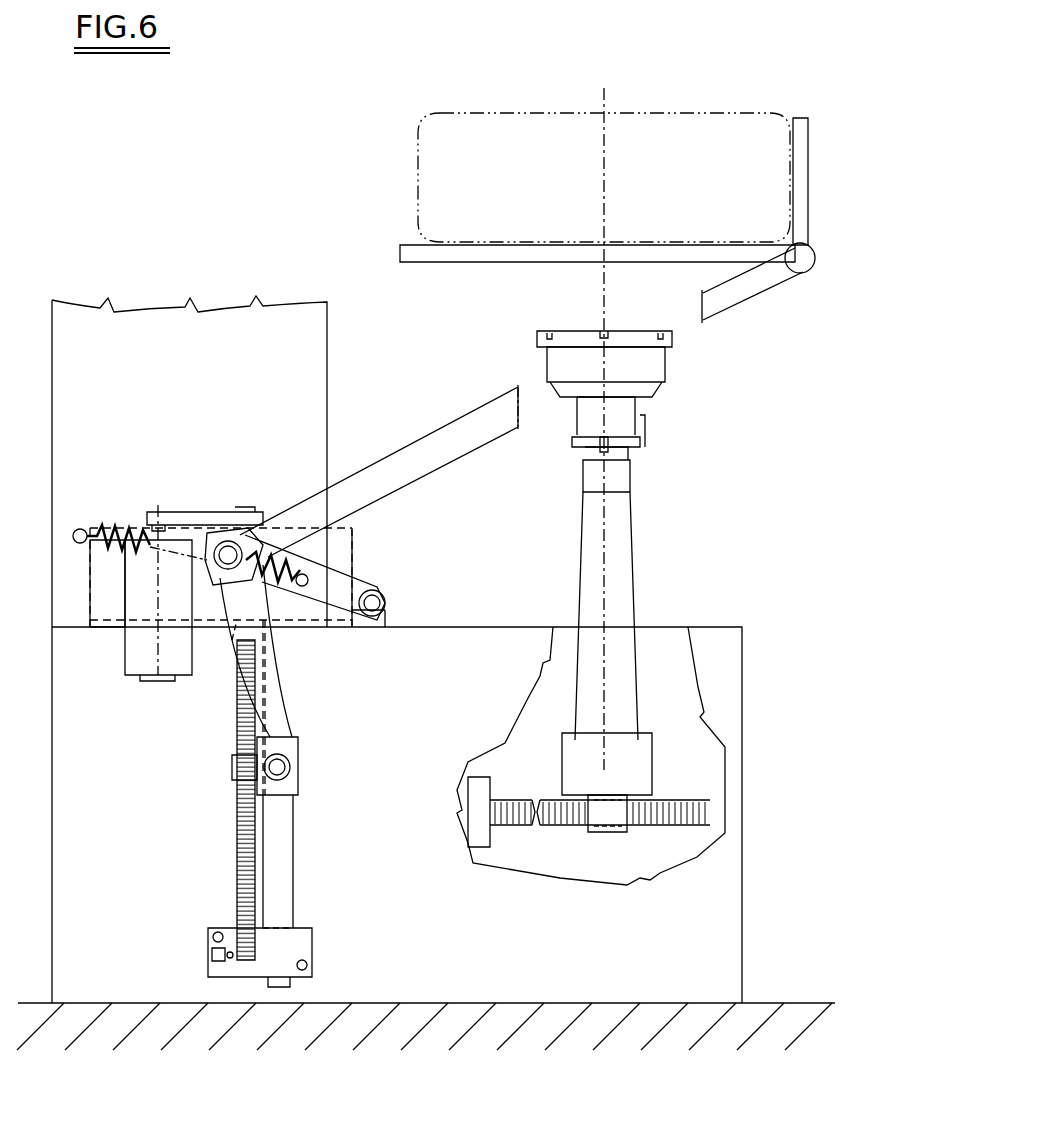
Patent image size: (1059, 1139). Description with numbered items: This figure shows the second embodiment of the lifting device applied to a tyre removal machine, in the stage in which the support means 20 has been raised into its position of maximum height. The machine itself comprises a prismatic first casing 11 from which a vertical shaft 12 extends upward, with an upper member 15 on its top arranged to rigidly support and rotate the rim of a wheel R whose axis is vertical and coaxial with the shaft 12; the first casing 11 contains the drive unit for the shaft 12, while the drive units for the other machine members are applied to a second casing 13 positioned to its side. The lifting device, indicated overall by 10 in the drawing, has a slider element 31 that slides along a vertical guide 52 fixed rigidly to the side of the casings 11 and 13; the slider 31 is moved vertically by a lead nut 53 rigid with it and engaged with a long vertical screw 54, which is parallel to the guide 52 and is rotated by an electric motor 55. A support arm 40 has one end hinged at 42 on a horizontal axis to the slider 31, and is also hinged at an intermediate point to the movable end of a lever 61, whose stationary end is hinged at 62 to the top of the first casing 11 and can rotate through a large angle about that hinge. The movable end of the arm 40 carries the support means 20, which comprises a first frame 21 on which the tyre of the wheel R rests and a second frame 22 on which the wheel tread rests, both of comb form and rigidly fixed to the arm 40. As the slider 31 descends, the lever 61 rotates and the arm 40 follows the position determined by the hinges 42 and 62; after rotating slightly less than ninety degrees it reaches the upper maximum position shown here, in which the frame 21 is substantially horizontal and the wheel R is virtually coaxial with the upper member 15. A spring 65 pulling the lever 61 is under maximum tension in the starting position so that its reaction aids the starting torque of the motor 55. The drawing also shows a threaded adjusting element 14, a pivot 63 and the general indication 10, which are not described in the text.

The wheel R is at (508, 112).
The lifting device 10 is at (218, 828).
The first casing 11 is at (742, 666).
The vertical shaft 12 is at (633, 540).
The second casing 13 is at (142, 302).
The adjusting screw 14 is at (656, 828).
The upper member 15 is at (672, 355).
The support means 20 is at (820, 240).
The first frame 21 is at (400, 250).
The second frame 22 is at (808, 133).
The slider element 31 is at (300, 790).
The support arm 40 is at (433, 430).
The hinge 42 is at (298, 755).
The vertical guide 52 is at (290, 866).
The lead nut 53 is at (232, 768).
The vertical screw 54 is at (237, 880).
The electric motor 55 is at (130, 667).
The lever 61 is at (343, 570).
The hinge 62 is at (385, 602).
The pivot pin 63 is at (212, 545).
The spring 65 is at (108, 530).